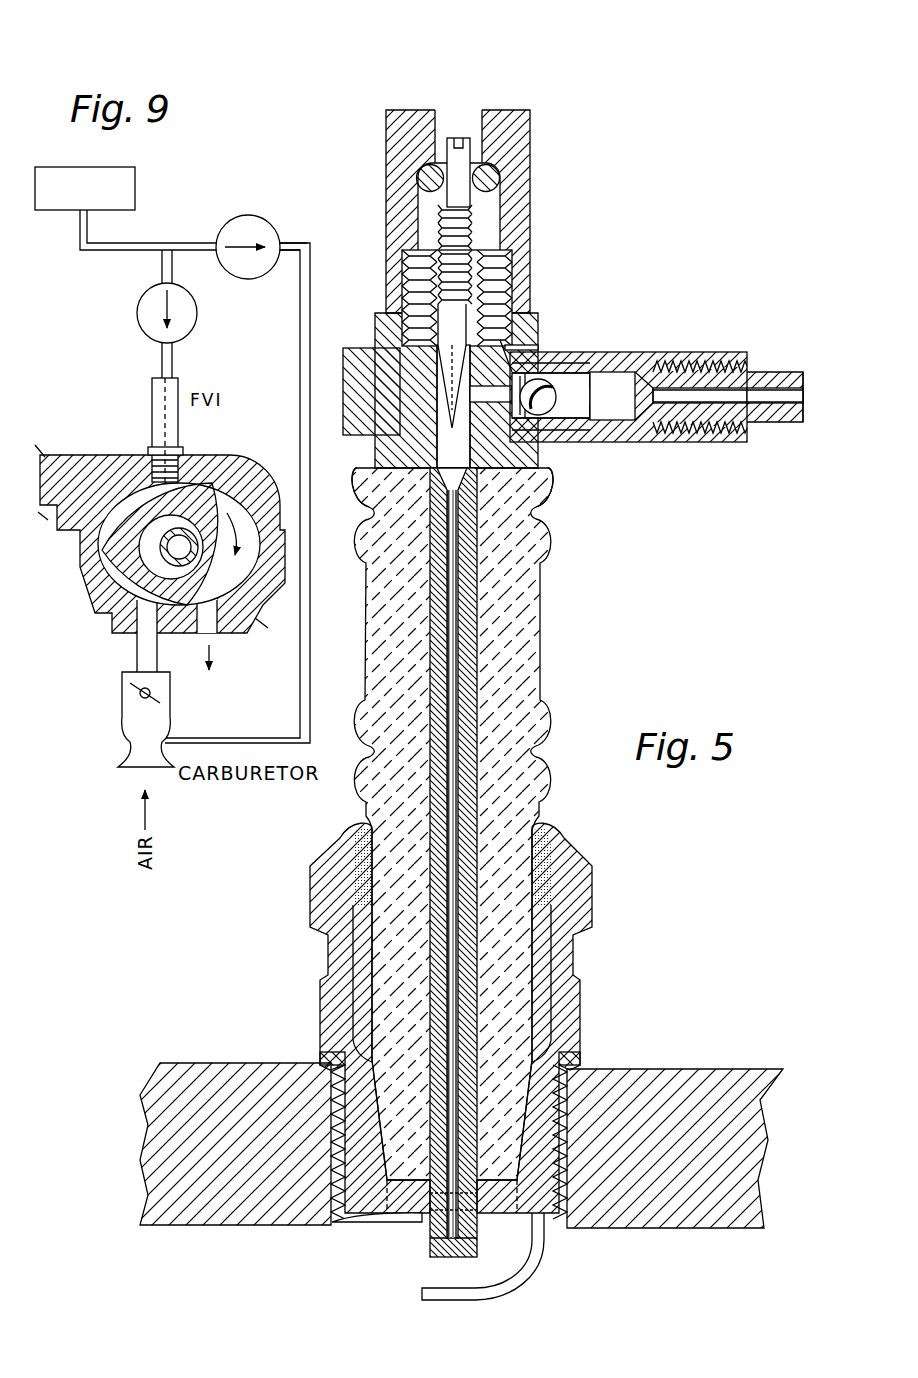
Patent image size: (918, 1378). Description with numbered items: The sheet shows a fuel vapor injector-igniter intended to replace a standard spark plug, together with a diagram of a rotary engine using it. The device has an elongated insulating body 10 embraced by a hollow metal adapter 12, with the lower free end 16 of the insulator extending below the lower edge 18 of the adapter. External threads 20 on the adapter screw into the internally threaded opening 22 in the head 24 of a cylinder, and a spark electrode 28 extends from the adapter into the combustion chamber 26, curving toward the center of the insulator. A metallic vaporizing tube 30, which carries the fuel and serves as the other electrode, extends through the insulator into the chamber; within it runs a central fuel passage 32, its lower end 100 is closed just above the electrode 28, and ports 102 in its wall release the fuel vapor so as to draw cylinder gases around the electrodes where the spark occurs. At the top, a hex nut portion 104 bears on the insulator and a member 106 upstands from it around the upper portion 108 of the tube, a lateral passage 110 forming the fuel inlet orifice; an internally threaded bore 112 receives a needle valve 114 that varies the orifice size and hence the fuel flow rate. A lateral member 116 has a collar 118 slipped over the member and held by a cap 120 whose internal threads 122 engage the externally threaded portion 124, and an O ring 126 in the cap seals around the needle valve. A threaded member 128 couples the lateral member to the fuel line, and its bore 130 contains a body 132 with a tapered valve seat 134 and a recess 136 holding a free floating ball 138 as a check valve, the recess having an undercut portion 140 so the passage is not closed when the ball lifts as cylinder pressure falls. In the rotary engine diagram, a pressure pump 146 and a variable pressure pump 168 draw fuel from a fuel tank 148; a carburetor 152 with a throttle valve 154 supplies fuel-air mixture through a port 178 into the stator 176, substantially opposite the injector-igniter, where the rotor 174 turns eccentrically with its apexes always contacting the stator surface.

In FIG. 5, the insulating body 10 is at (552, 681).
In FIG. 5, the metal adapter 12 is at (592, 905).
In FIG. 5, the lower free end 16 is at (410, 1214).
In FIG. 5, the lower edge 18 is at (345, 1216).
In FIG. 5, the external threads 20 is at (580, 1070).
In FIG. 5, the internally threaded opening 22 is at (553, 1225).
In FIG. 5, the head 24 is at (690, 1069).
In FIG. 5, the combustion chamber 26 is at (214, 1265).
In FIG. 5, the spark electrode 28 is at (437, 1302).
In FIG. 5, the vaporizing tube 30 is at (480, 626).
In FIG. 9, the vaporizing tube 30 is at (165, 410).
In FIG. 5, the fuel passage 32 is at (455, 586).
In FIG. 5, the lower end 100 is at (425, 1262).
In FIG. 5, the ports 102 is at (467, 1214).
In FIG. 5, the hex nut portion 104 is at (362, 466).
In FIG. 5, the member 106 is at (410, 358).
In FIG. 5, the upper portion 108 is at (455, 445).
In FIG. 5, the lateral passage 110 is at (537, 468).
In FIG. 5, the internally threaded bore 112 is at (490, 350).
In FIG. 5, the needle valve 114 is at (480, 218).
In FIG. 5, the lateral member 116 is at (650, 352).
In FIG. 5, the collar 118 is at (345, 372).
In FIG. 5, the cap 120 is at (530, 137).
In FIG. 5, the internal threads 122 is at (400, 290).
In FIG. 5, the externally threaded portion 124 is at (515, 266).
In FIG. 5, the O ring 126 is at (415, 178).
In FIG. 5, the threaded member 128 is at (745, 368).
In FIG. 5, the bore 130 is at (690, 395).
In FIG. 5, the body 132 is at (572, 374).
In FIG. 5, the tapered valve seat 134 is at (556, 362).
In FIG. 5, the recess 136 is at (518, 413).
In FIG. 5, the free floating ball 138 is at (550, 410).
In FIG. 5, the undercut portion 140 is at (540, 357).
In FIG. 9, the pressure pump 146 is at (252, 215).
In FIG. 9, the fuel tank 148 is at (135, 182).
In FIG. 9, the carburetor 152 is at (122, 726).
In FIG. 9, the throttle valve 154 is at (130, 697).
In FIG. 9, the variable pressure pump 168 is at (198, 331).
In FIG. 9, the rotor 174 is at (200, 500).
In FIG. 9, the stator 176 is at (137, 460).
In FIG. 9, the port 178 is at (143, 636).